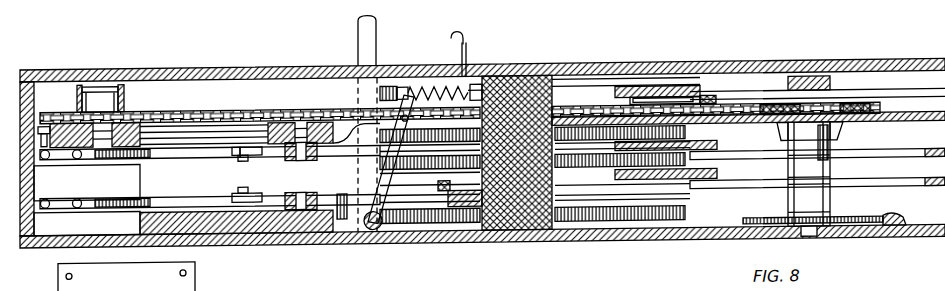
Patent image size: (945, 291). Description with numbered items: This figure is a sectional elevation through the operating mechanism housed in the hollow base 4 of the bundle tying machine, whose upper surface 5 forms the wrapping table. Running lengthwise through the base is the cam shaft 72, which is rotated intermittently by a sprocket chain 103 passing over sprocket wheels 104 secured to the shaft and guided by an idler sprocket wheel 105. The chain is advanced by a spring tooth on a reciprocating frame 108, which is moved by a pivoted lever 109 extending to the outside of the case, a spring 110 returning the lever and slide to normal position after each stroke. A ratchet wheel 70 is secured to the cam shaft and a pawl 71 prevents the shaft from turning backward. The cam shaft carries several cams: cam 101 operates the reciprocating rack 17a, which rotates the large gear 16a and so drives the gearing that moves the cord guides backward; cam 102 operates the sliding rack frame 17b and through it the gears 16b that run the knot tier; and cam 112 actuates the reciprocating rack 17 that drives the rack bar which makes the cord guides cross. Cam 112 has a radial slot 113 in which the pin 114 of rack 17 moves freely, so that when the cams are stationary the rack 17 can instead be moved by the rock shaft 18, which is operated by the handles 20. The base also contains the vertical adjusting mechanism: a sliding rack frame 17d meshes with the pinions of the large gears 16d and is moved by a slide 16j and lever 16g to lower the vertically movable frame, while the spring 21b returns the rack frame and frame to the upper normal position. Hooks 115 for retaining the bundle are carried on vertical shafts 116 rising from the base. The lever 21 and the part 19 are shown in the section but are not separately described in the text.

The hollow base 4 is at (482, 174).
The wrapping table 5 is at (517, 136).
The reciprocating rack 17 is at (588, 97).
The reciprocating rack 17a is at (636, 137).
The sliding rack frame 17b is at (690, 194).
The sliding rack frame 17d is at (458, 213).
The large gear 16a is at (656, 145).
The gear 16b is at (688, 168).
The large gear 16d is at (580, 224).
The lever 16g is at (210, 199).
The slide 16j is at (322, 230).
The rock shaft 18 is at (373, 236).
The lever 19 is at (384, 159).
The handle 20 is at (353, 121).
The spring 21 is at (428, 95).
The spring 21b is at (175, 207).
The ratchet wheel 70 is at (813, 209).
The pawl 71 is at (889, 209).
The cam shaft 72 is at (812, 138).
The cam 101 is at (817, 143).
The cam 102 is at (817, 191).
The sprocket chain 103 is at (460, 103).
The sprocket wheel 104 is at (838, 114).
The sprocket wheel 105 is at (122, 114).
The reciprocating frame 108 is at (320, 134).
The pivoted lever 109 is at (306, 157).
The spring 110 is at (127, 164).
The cam 112 is at (817, 85).
The radial slot 113 is at (664, 104).
The pin 114 is at (706, 104).
The hook 115 is at (484, 53).
The vertical shaft 116 is at (456, 54).